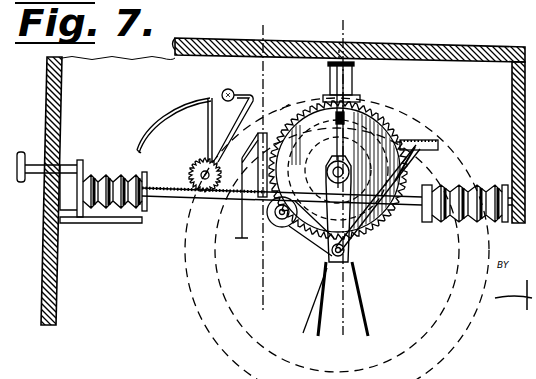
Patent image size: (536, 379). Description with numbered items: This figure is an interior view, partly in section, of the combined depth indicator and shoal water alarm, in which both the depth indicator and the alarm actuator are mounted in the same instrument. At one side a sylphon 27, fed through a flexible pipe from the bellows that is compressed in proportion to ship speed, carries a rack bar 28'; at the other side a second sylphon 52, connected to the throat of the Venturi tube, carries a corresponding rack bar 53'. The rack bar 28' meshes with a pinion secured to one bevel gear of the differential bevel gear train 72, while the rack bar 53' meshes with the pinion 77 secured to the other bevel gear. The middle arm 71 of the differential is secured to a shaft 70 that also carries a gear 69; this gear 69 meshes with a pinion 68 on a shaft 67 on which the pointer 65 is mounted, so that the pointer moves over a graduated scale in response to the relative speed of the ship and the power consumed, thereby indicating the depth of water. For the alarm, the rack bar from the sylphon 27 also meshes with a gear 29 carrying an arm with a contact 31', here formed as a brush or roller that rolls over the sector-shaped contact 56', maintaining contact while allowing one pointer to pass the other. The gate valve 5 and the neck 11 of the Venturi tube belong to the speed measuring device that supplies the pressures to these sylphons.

The gate valve 5 is at (375, 22).
The neck 11 is at (215, 24).
The sylphon 27 is at (82, 187).
The rack bar 28' is at (337, 238).
The gear 29 is at (198, 165).
The contact 31' is at (231, 114).
The second sylphon 52 is at (465, 220).
The rack bar 53' is at (283, 215).
The contact 56' is at (163, 130).
The pointer 65 is at (418, 156).
The shaft 67 is at (344, 252).
The pinion 68 is at (327, 268).
The gear 69 is at (297, 122).
The shaft 70 is at (338, 209).
The middle arm 71 is at (339, 92).
The differential bevel gear train 72 is at (357, 96).
The pinion 77 is at (338, 170).